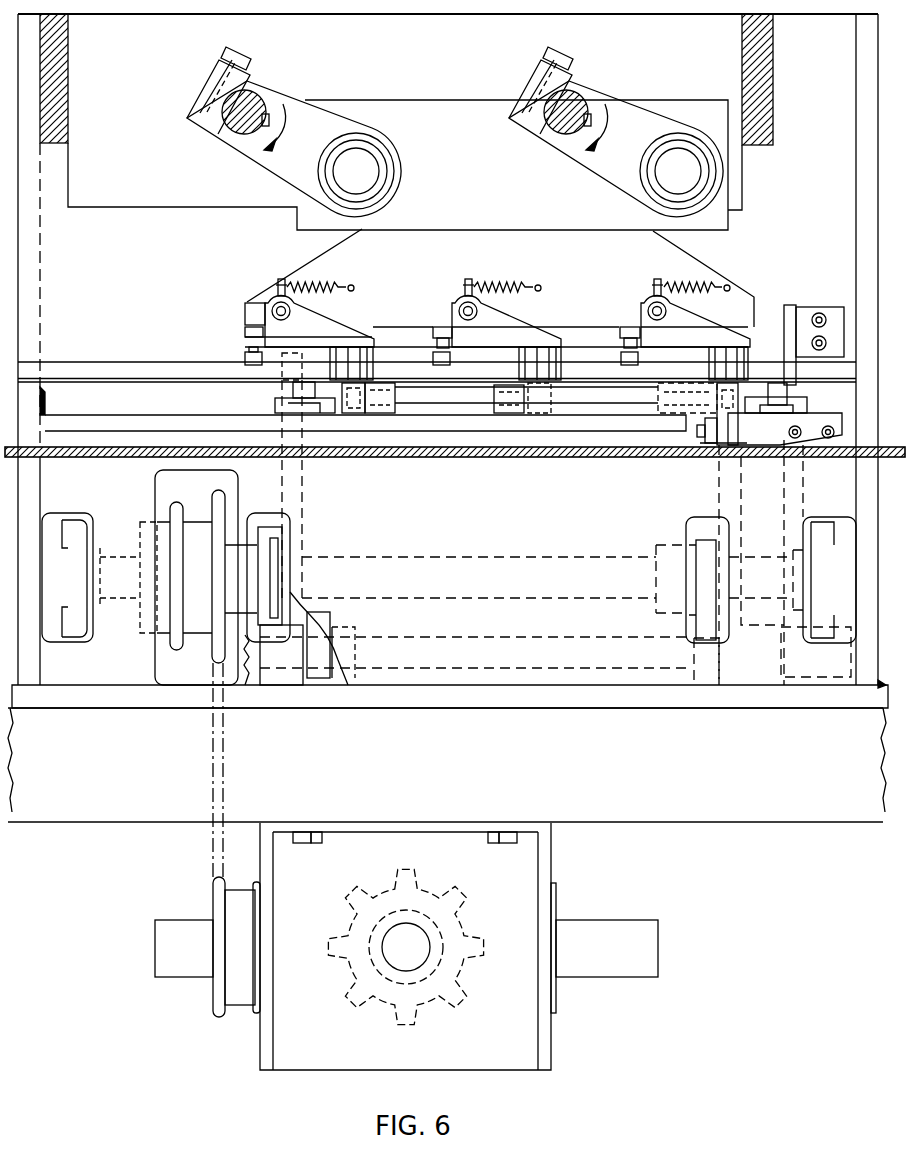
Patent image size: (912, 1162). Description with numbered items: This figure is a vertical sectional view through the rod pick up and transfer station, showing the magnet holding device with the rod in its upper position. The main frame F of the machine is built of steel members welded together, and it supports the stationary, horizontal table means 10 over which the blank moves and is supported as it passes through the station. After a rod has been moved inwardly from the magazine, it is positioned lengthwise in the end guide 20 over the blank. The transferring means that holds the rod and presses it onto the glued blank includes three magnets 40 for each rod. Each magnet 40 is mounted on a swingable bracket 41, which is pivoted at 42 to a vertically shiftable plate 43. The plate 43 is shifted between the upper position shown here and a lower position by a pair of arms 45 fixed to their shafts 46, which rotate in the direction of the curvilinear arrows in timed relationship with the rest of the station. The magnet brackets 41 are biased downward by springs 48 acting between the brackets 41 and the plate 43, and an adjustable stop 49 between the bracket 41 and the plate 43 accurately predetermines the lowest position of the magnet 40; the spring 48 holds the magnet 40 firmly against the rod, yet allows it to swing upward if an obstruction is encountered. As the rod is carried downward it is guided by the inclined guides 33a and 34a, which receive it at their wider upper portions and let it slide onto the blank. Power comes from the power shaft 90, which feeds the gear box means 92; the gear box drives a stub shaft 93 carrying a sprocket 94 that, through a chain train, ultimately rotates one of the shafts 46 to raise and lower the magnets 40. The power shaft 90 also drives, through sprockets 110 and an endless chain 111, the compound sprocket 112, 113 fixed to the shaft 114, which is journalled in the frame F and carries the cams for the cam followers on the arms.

The table means 10 is at (135, 446).
The end guide 20 is at (791, 305).
The guide 33a is at (695, 438).
The guide 34a is at (758, 440).
The magnet 40 is at (366, 358).
The swingable bracket 41 is at (708, 331).
The pivot 42 is at (462, 300).
The vertically shiftable plate 43 is at (318, 266).
The arm 45 is at (300, 101).
The shaft 46 is at (247, 95).
The spring 48 is at (509, 284).
The adjustable stop 49 is at (431, 330).
The power shaft 90 is at (165, 972).
The gear box means 92 is at (306, 1064).
The stub shaft 93 is at (420, 936).
The sprocket 94 is at (450, 986).
The sprocket 110 is at (222, 1006).
The endless chain 111 is at (215, 840).
The compound sprocket 112 is at (218, 658).
The compound sprocket 113 is at (174, 645).
The shaft 114 is at (414, 566).
The main frame F is at (797, 822).